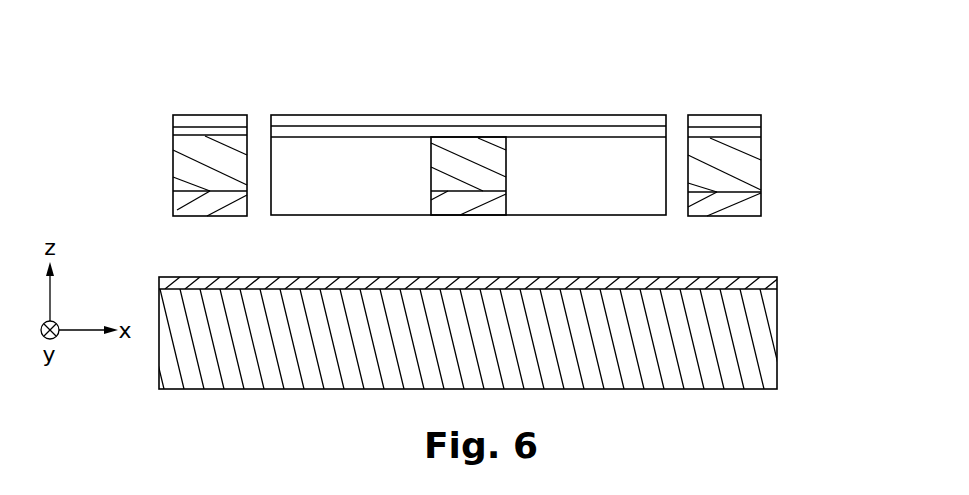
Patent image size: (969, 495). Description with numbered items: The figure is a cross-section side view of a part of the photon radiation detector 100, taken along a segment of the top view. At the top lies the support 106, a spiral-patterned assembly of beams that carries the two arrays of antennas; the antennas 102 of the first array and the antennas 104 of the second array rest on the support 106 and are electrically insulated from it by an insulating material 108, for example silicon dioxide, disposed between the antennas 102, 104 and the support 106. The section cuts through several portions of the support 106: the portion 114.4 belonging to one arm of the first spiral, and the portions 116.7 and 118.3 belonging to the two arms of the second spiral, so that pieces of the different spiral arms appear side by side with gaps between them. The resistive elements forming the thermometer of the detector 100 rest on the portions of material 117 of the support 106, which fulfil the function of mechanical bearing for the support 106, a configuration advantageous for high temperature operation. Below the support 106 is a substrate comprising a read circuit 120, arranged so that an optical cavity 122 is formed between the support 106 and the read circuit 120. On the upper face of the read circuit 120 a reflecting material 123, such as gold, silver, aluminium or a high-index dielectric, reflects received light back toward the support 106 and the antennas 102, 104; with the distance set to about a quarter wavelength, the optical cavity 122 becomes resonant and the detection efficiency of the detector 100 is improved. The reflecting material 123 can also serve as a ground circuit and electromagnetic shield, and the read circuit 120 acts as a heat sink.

The detector 100 is at (788, 80).
The antennas of the first array 102 is at (355, 120).
The antennas of the second array 104 is at (217, 120).
The support 106 is at (850, 128).
The insulating material 108 is at (177, 132).
The portion of the support 114.4 is at (448, 167).
The portion of the support 116.7 is at (182, 168).
The portions of material 117 is at (177, 202).
The portion of the support 118.3 is at (750, 173).
The read circuit 120 is at (770, 350).
The optical cavity 122 is at (788, 240).
The reflecting material 123 is at (772, 283).